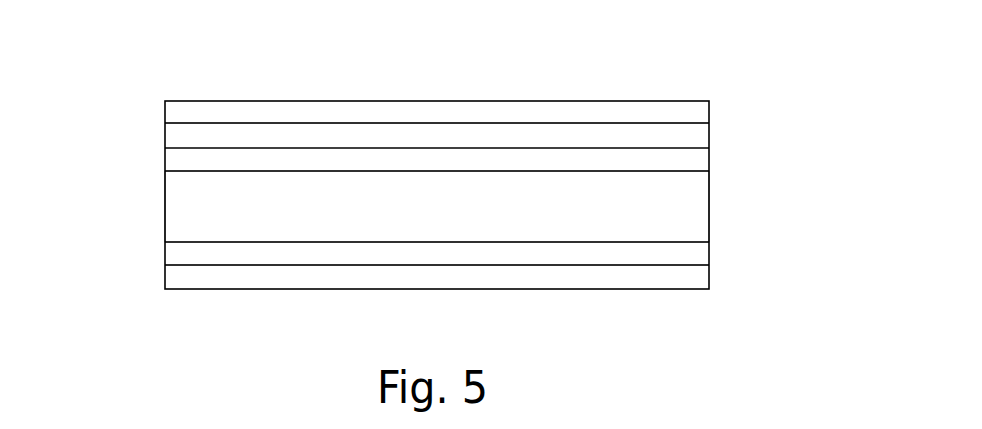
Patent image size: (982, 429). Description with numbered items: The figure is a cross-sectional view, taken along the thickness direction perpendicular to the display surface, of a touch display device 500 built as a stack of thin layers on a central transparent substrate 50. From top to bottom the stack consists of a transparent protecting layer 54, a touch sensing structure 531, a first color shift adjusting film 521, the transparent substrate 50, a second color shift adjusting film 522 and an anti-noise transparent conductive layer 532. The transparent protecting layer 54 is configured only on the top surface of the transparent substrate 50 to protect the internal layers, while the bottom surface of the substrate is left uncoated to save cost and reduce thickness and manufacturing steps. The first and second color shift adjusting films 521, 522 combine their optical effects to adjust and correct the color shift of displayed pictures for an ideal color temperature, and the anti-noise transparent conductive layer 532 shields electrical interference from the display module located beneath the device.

The touch display device 500 is at (623, 81).
The transparent protecting layer 54 is at (183, 112).
The first color shift adjusting film 521 is at (177, 159).
The second color shift adjusting film 522 is at (184, 253).
The touch sensing structure 531 is at (692, 135).
The transparent substrate 50 is at (685, 207).
The anti-noise transparent conductive layer 532 is at (692, 278).